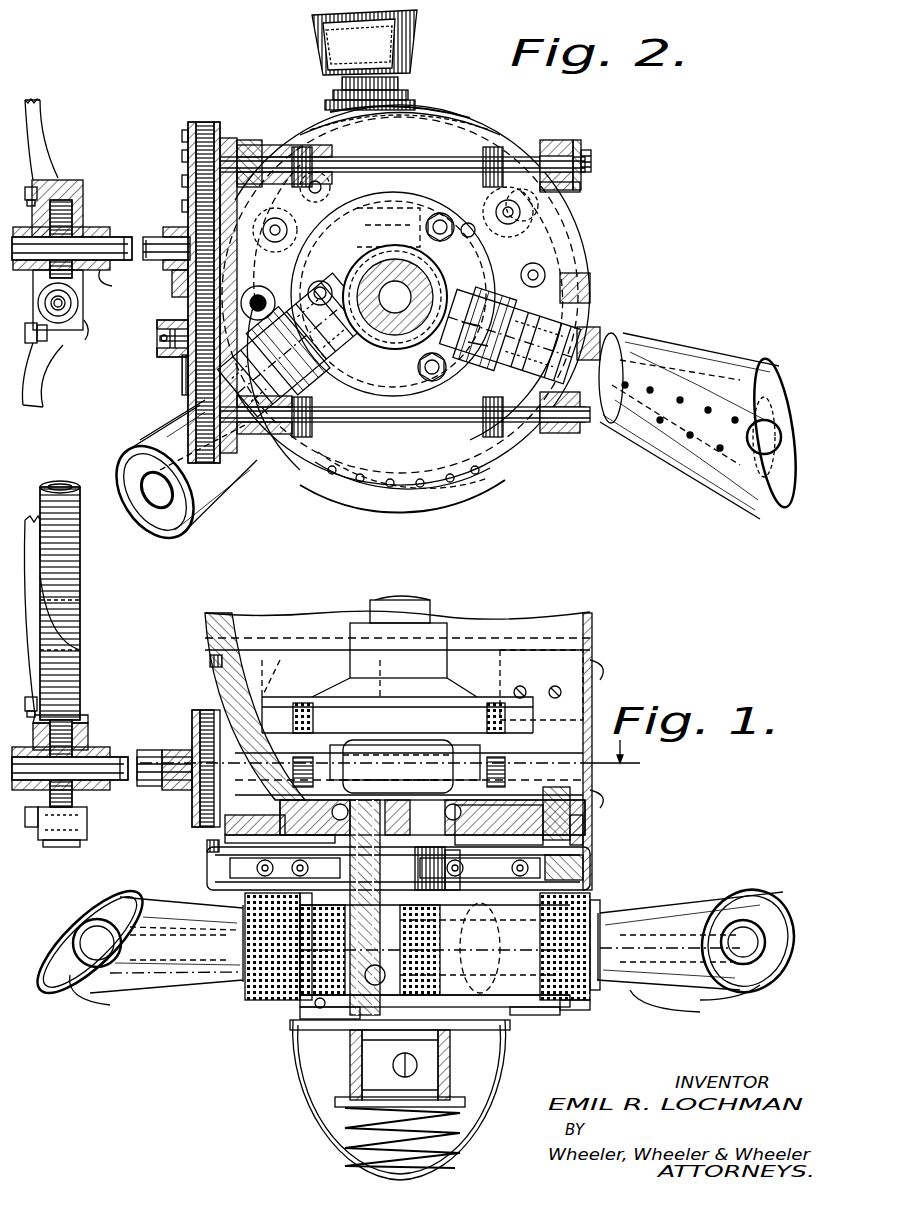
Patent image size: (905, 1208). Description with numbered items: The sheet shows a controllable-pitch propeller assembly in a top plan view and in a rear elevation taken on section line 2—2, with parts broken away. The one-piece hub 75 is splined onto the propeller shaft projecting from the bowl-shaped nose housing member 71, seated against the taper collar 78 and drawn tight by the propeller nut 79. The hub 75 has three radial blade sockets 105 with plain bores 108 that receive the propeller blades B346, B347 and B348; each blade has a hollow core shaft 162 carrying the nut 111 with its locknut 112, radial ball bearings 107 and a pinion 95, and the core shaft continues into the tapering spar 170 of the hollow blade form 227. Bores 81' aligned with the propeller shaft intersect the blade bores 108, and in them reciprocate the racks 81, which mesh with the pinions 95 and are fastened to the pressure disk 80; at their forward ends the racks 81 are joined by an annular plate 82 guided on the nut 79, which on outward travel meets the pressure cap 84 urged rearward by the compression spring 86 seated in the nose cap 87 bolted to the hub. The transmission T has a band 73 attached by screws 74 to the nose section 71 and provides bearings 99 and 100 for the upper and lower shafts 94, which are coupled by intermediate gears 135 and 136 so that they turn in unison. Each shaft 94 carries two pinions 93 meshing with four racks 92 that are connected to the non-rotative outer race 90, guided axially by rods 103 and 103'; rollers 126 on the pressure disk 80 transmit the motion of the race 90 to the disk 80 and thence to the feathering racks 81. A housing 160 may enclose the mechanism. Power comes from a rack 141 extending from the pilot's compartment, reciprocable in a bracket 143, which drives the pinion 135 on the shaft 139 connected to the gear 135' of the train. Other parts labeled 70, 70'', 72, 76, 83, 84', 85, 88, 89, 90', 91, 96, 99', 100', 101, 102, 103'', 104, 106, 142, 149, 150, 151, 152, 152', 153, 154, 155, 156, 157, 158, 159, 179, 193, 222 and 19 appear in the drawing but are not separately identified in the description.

In FIG. 2, the hub shaft 70 is at (395, 297).
In FIG. 1, the hub shaft 70 is at (395, 689).
In FIG. 1, the boss 70'' is at (394, 640).
In FIG. 2, the nose housing member 71 is at (470, 472).
In FIG. 1, the nose housing member 71 is at (208, 660).
In FIG. 1, the housing 72 is at (606, 594).
In FIG. 2, the band 73 is at (585, 262).
In FIG. 1, the band 73 is at (592, 680).
In FIG. 2, the screws 74 is at (345, 482).
In FIG. 1, the screws 74 is at (555, 686).
In FIG. 1, the hub 75 is at (530, 1015).
In FIG. 1, the spindle 76 is at (385, 870).
In FIG. 1, the taper collar 78 is at (370, 950).
In FIG. 1, the nut 79 is at (400, 1062).
In FIG. 2, the pressure disk 80 is at (449, 238).
In FIG. 1, the pressure disk 80 is at (475, 870).
In FIG. 1, the racks 81 is at (447, 868).
In FIG. 1, the bores 81' is at (435, 949).
In FIG. 1, the annular plate 82 is at (490, 1000).
In FIG. 1, the pin 83 is at (388, 986).
In FIG. 1, the pressure cap 84 is at (400, 1060).
In FIG. 1, the bolt 84' is at (330, 1033).
In FIG. 1, the spring seat 85 is at (465, 1102).
In FIG. 1, the compression spring 86 is at (458, 1140).
In FIG. 1, the nose cap 87 is at (345, 1135).
In FIG. 1, the gear 88 is at (278, 1000).
In FIG. 1, the gear 89 is at (285, 1010).
In FIG. 1, the outer race 90 is at (495, 872).
In FIG. 1, the frame 90' is at (400, 868).
In FIG. 1, the bolt 91 is at (300, 1020).
In FIG. 2, the racks 92 is at (312, 432).
In FIG. 1, the racks 92 is at (513, 830).
In FIG. 2, the pinions 93 is at (300, 188).
In FIG. 1, the pinions 93 is at (308, 740).
In FIG. 2, the shafts 94 is at (405, 205).
In FIG. 1, the shafts 94 is at (450, 745).
In FIG. 2, the pinion 95 is at (473, 317).
In FIG. 2, the screw 96 is at (475, 337).
In FIG. 2, the bearing 99 is at (284, 275).
In FIG. 2, the sleeve 99' is at (248, 151).
In FIG. 2, the bearing 100 is at (544, 149).
In FIG. 2, the flange 100' is at (571, 149).
In FIG. 2, the plate 101 is at (582, 190).
In FIG. 2, the nut 102 is at (592, 162).
In FIG. 2, the rod 103 is at (597, 316).
In FIG. 1, the rod 103 is at (604, 830).
In FIG. 1, the rod 103' is at (280, 829).
In FIG. 1, the flange 103'' is at (189, 845).
In FIG. 2, the flange 104 is at (540, 433).
In FIG. 2, the blade socket 105 is at (536, 362).
In FIG. 2, the cover 106 is at (425, 112).
In FIG. 1, the cover 106 is at (570, 1012).
In FIG. 2, the radial ball bearings 107 is at (322, 360).
In FIG. 2, the bore 108 is at (388, 288).
In FIG. 1, the nut 111 is at (590, 985).
In FIG. 1, the locknut 112 is at (595, 995).
In FIG. 2, the rollers 126 is at (540, 210).
In FIG. 1, the rollers 126 is at (290, 876).
In FIG. 2, the intermediate gear 135 is at (73, 227).
In FIG. 1, the intermediate gear 135 is at (83, 762).
In FIG. 2, the gear 135' is at (155, 379).
In FIG. 2, the intermediate gear 136 is at (208, 122).
In FIG. 1, the intermediate gear 136 is at (270, 690).
In FIG. 2, the shaft 139 is at (119, 280).
In FIG. 1, the shaft 139 is at (98, 792).
In FIG. 2, the rack 141 is at (80, 306).
In FIG. 1, the rack 141 is at (80, 540).
In FIG. 1, the bar 142 is at (80, 612).
In FIG. 2, the bracket 143 is at (40, 112).
In FIG. 1, the bracket 143 is at (22, 525).
In FIG. 2, the hub 149 is at (89, 323).
In FIG. 1, the hub 149 is at (86, 712).
In FIG. 2, the nut 150 is at (28, 322).
In FIG. 1, the nut 150 is at (30, 828).
In FIG. 2, the bolt 151 is at (26, 190).
In FIG. 1, the bolt 151 is at (26, 700).
In FIG. 2, the gear 152 is at (165, 142).
In FIG. 1, the gear 152 is at (187, 756).
In FIG. 2, the gear 152' is at (166, 189).
In FIG. 2, the shaft 153 is at (98, 237).
In FIG. 2, the shaft 154 is at (165, 238).
In FIG. 2, the bearing 155 is at (175, 290).
In FIG. 1, the bearing 155 is at (176, 790).
In FIG. 2, the pin 156 is at (180, 362).
In FIG. 2, the pin 157 is at (158, 345).
In FIG. 2, the hub 158 is at (158, 330).
In FIG. 1, the nut 159 is at (87, 828).
In FIG. 1, the housing 160 is at (590, 862).
In FIG. 1, the hollow core shaft 162 is at (80, 922).
In FIG. 1, the spar 170 is at (739, 998).
In FIG. 1, the passage 179 is at (153, 960).
In FIG. 2, the perforation 193 is at (718, 452).
In FIG. 2, the opening 222 is at (660, 470).
In FIG. 1, the hollow blade form 227 is at (45, 968).
In FIG. 1, the section line 2 is at (152, 757).
In FIG. 1, the hole 19 is at (391, 1066).
In FIG. 2, the transmission casing T is at (300, 128).
In FIG. 1, the transmission casing T is at (605, 670).
In FIG. 2, the propeller blade B346 is at (752, 327).
In FIG. 1, the propeller blade B346 is at (722, 875).
In FIG. 2, the propeller blade B347 is at (205, 515).
In FIG. 1, the propeller blade B347 is at (118, 1000).
In FIG. 2, the propeller blade B348 is at (312, 40).